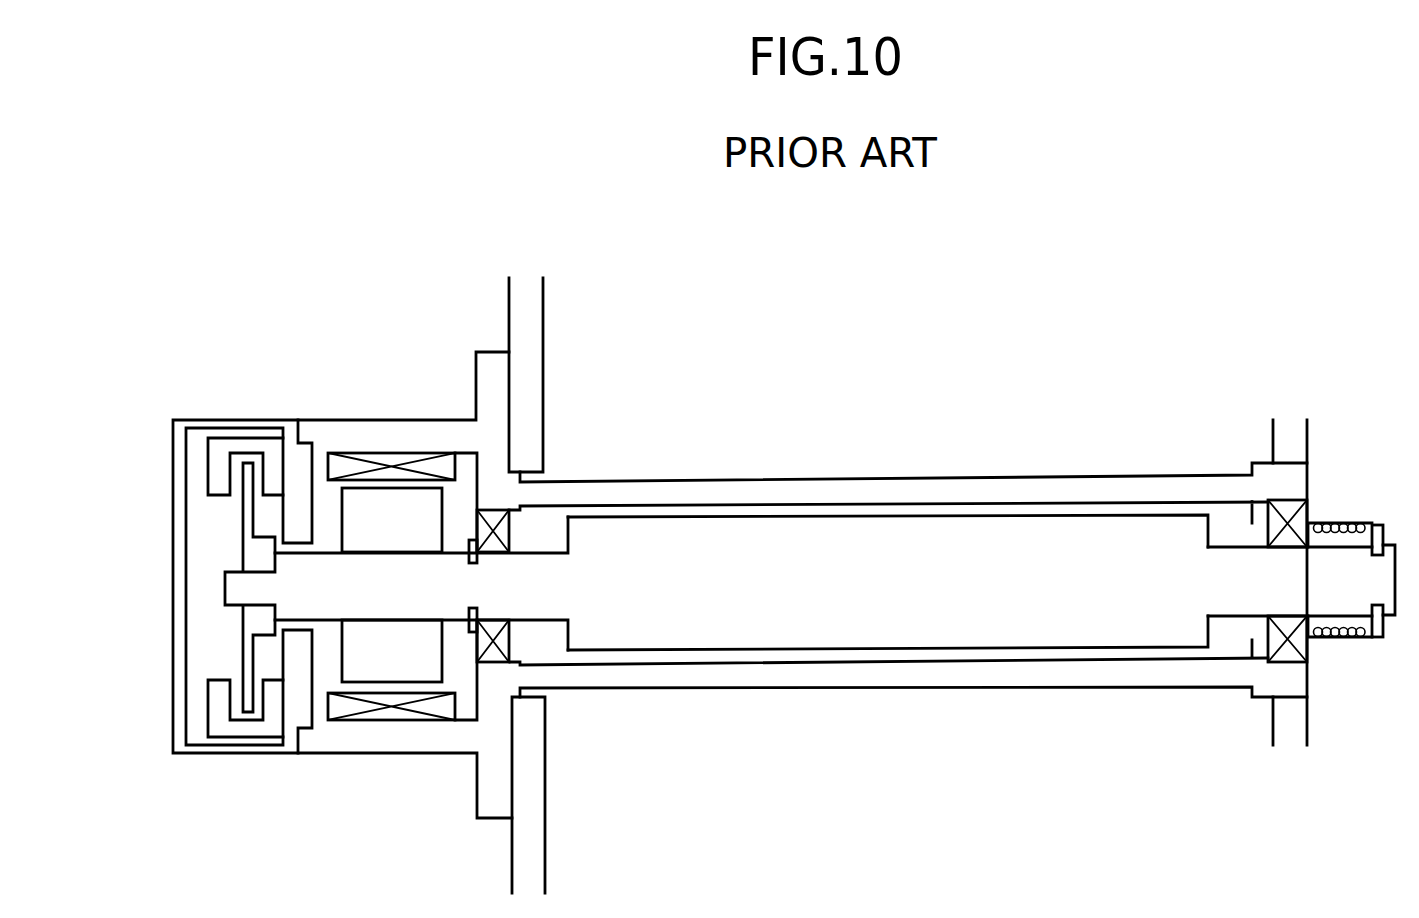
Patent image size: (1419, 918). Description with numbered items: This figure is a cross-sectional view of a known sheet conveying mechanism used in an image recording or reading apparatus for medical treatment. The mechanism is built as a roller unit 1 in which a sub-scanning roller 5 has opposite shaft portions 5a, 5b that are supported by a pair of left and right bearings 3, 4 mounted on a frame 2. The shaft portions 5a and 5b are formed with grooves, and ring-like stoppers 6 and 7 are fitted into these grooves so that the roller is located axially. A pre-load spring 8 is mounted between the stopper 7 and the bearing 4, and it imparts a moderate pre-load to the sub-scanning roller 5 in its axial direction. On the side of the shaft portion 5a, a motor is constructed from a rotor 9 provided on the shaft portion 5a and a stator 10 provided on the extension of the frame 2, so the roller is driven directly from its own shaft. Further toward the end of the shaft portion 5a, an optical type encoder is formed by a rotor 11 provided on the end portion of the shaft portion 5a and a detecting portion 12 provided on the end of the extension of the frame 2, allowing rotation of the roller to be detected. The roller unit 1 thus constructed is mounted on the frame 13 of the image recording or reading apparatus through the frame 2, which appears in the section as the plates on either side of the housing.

The roller unit 1 is at (803, 455).
The frame 2 is at (622, 480).
The bearing 3 is at (495, 510).
The bearing 4 is at (1285, 507).
The sub-scanning roller 5 is at (982, 537).
The shaft portion 5a is at (387, 600).
The shaft portion 5b is at (1247, 602).
The stopper 6 is at (473, 627).
The stopper 7 is at (1385, 633).
The pre-load spring 8 is at (1350, 528).
The rotor 9 is at (365, 515).
The stator 10 is at (388, 457).
The rotor 11 is at (243, 540).
The detecting portion 12 is at (242, 448).
The frame 13 is at (522, 350).